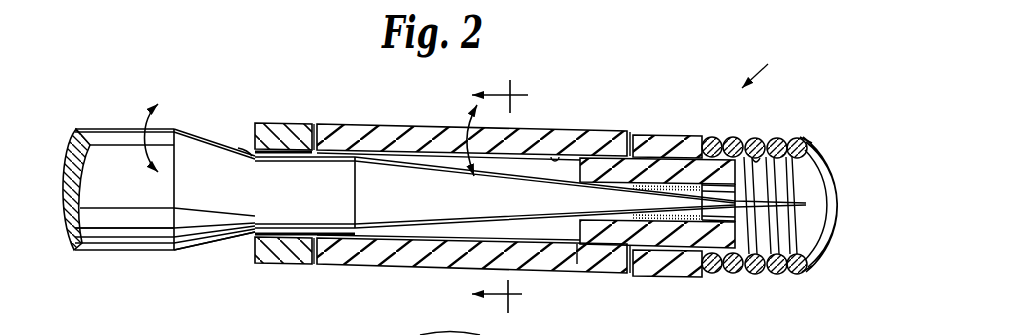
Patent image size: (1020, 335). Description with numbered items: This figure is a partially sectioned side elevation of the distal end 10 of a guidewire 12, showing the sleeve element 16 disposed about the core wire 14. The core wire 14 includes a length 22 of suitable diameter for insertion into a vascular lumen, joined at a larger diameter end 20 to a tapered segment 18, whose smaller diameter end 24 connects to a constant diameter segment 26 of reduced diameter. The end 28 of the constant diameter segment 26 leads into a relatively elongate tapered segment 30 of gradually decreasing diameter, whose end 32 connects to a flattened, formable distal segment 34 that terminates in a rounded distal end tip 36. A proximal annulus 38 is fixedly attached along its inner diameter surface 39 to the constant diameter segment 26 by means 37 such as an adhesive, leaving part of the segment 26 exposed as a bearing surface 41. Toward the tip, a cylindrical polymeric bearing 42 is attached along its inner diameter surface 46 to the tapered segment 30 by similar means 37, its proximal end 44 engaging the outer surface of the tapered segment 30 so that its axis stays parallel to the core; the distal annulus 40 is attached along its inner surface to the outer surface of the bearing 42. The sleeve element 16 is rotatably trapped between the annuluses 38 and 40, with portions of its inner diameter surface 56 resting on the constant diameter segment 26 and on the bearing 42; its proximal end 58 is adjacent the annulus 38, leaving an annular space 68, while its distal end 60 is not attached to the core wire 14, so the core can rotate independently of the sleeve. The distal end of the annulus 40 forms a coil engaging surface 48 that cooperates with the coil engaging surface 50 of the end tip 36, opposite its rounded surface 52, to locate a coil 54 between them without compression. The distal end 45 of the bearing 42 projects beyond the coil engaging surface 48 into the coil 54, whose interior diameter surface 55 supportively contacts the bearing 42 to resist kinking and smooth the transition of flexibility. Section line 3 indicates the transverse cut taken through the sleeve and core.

The section line 3- 3 is at (510, 196).
The distal end 10 is at (769, 69).
The guidewire 12 is at (115, 150).
The core wire 14 is at (222, 251).
The sleeve element 16 is at (437, 120).
The tapered segment 18 is at (196, 204).
The larger diameter end 20 is at (170, 218).
The length of the wire 22 is at (116, 204).
The smaller diameter end 24 is at (250, 158).
The constant diameter segment 26 is at (288, 206).
The end of the constant diameter segment 28 is at (365, 238).
The elongate tapered segment 30 is at (483, 211).
The end of the elongate tapered segment 32 is at (765, 272).
The formable distal segment 34 is at (825, 222).
The distal end tip 36 is at (827, 167).
The attachment means 37 is at (316, 143).
The proximal annulus 38 is at (275, 262).
The inner diameter surface of the proximal annulus 39 is at (299, 143).
The distal annulus 40 is at (632, 155).
The bearing surface 41 is at (353, 140).
The bearing 42 is at (683, 275).
The proximal end of the bearing 44 is at (570, 250).
The distal end of the bearing 45 is at (732, 274).
The inner diameter surface of the bearing 46 is at (626, 186).
The coil engaging surface 48 is at (710, 137).
The coil engaging surface of the end tip 50 is at (792, 162).
The rounded surface 52 is at (825, 258).
The coil 54 is at (773, 274).
The interior diameter surface of the coil 55 is at (758, 162).
The inner diameter surface of the sleeve element 56 is at (555, 157).
The proximal end of the sleeve element 58 is at (305, 260).
The distal end of the sleeve element 60 is at (632, 275).
The annular space 68 is at (318, 148).